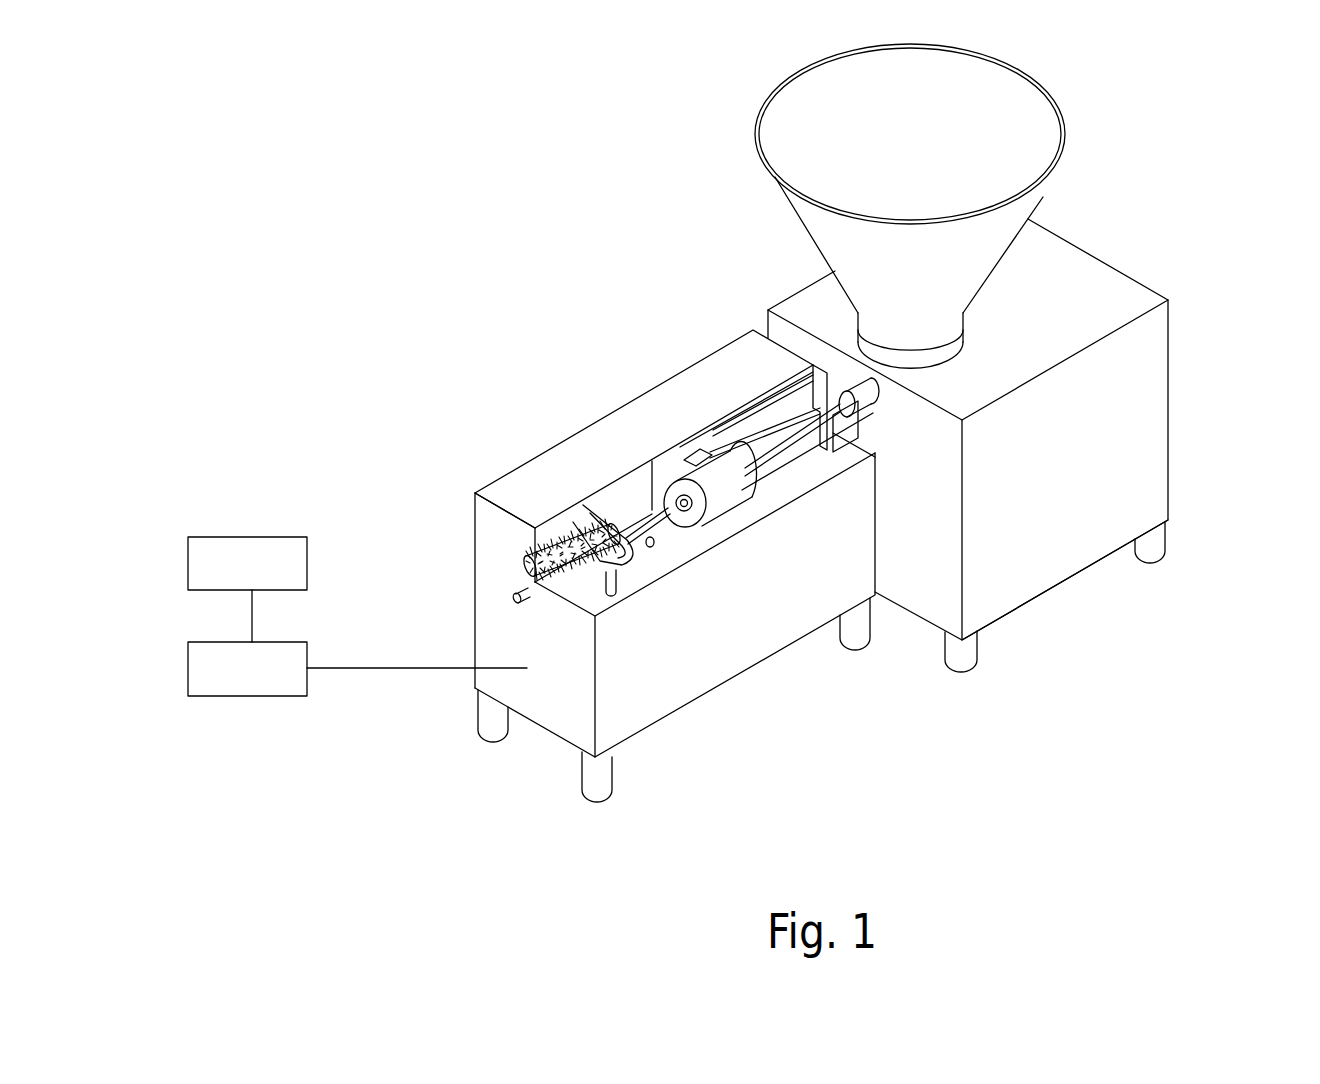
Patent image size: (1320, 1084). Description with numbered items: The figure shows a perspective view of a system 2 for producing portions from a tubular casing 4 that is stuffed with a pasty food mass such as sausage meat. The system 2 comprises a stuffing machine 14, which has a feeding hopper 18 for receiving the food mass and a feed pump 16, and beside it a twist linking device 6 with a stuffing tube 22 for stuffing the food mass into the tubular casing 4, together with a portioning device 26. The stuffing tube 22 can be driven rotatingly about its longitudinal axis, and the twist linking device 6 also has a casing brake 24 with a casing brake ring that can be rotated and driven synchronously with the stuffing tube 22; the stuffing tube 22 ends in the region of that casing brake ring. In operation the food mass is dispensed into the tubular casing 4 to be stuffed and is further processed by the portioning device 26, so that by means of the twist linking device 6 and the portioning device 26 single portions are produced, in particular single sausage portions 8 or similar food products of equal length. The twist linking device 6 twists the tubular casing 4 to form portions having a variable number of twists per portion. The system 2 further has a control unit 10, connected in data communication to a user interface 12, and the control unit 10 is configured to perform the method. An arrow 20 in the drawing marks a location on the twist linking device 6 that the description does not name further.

The system 2 is at (243, 122).
The tubular casing 4 is at (613, 562).
The twist linking device 6 is at (774, 588).
The sausage portions 8 is at (503, 604).
The control unit 10 is at (217, 668).
The user interface 12 is at (217, 562).
The stuffing machine 14 is at (1122, 378).
The feed pump 16 is at (1124, 455).
The feeding hopper 18 is at (1027, 127).
The outlet 20 is at (468, 613).
The stuffing tube 22 is at (653, 515).
The casing brake 24 is at (588, 523).
The portioning device 26 is at (608, 611).